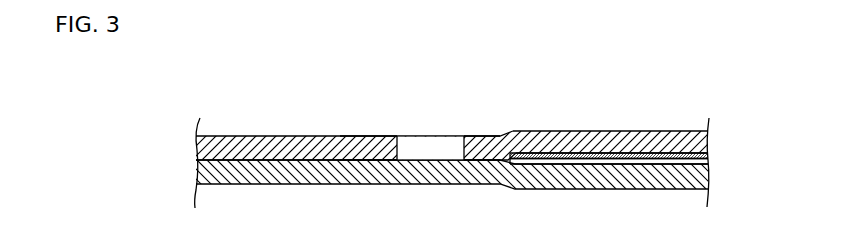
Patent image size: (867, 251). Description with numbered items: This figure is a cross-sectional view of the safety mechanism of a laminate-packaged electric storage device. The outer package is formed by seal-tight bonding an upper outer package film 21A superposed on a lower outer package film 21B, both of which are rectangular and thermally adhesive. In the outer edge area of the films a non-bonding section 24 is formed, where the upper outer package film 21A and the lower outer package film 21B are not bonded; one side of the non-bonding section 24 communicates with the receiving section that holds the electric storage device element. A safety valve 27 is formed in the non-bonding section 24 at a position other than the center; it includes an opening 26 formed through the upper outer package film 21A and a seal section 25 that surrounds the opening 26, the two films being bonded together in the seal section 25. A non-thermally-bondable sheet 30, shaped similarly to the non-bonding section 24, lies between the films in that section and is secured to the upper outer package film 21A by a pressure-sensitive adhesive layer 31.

The upper outer package film 21A is at (228, 135).
The lower outer package film 21B is at (236, 186).
The non-bonding section 24 is at (658, 140).
The seal section 25 is at (480, 135).
The opening 26 is at (408, 135).
The safety valve 27 is at (438, 134).
The non-thermally-bondable sheet 30 is at (661, 160).
The pressure-sensitive adhesive layer 31 is at (595, 154).